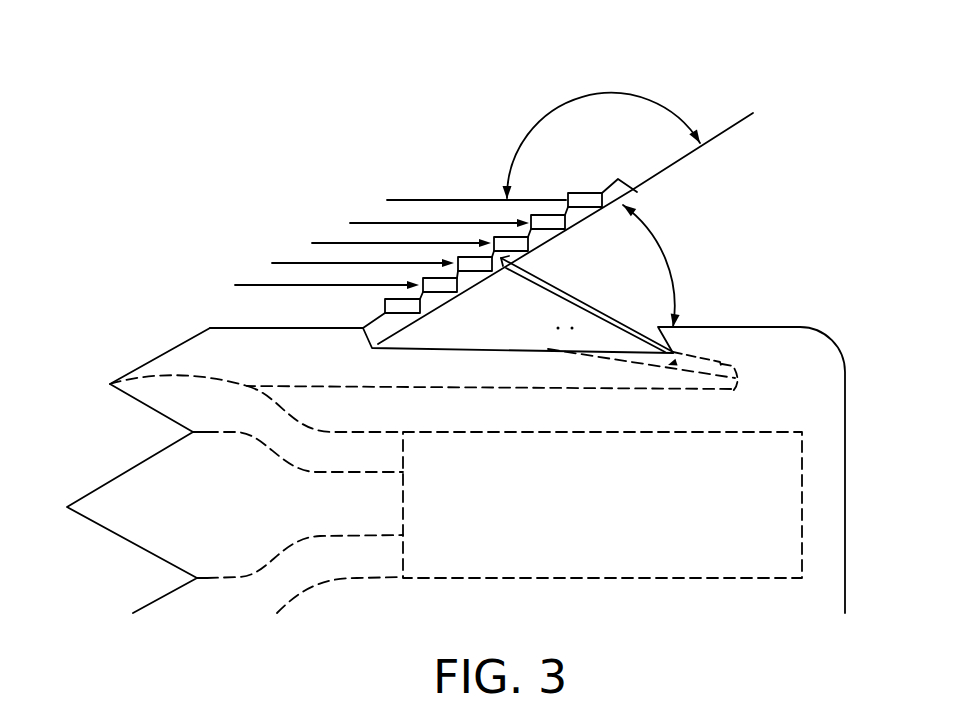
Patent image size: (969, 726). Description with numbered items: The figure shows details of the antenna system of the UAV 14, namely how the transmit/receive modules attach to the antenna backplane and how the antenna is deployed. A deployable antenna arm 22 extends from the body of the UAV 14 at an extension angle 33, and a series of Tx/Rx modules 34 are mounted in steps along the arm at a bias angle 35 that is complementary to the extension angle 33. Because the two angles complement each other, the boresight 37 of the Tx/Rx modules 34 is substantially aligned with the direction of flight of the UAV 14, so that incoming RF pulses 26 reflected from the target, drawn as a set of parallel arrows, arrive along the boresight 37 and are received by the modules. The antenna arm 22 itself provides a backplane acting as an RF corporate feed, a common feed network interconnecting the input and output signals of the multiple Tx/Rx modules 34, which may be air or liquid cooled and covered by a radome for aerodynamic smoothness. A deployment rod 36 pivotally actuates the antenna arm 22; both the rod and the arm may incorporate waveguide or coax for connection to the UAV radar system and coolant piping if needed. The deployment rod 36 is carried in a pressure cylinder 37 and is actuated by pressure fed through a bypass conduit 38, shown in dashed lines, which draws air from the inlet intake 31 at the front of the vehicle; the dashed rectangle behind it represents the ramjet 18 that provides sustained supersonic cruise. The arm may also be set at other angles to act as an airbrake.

The UAV 14 is at (785, 345).
The ramjet 18 is at (494, 515).
The antenna arms 22 is at (637, 192).
The RF pulses 26 is at (367, 222).
The inlet intake 31 is at (127, 440).
The extension angle 33 is at (667, 263).
The Tx/Rx modules 34 is at (552, 224).
The bias angle 35 is at (538, 124).
The deployment rod 36 is at (567, 298).
The boresight 37 is at (419, 200).
The bypass conduit 38 is at (647, 390).